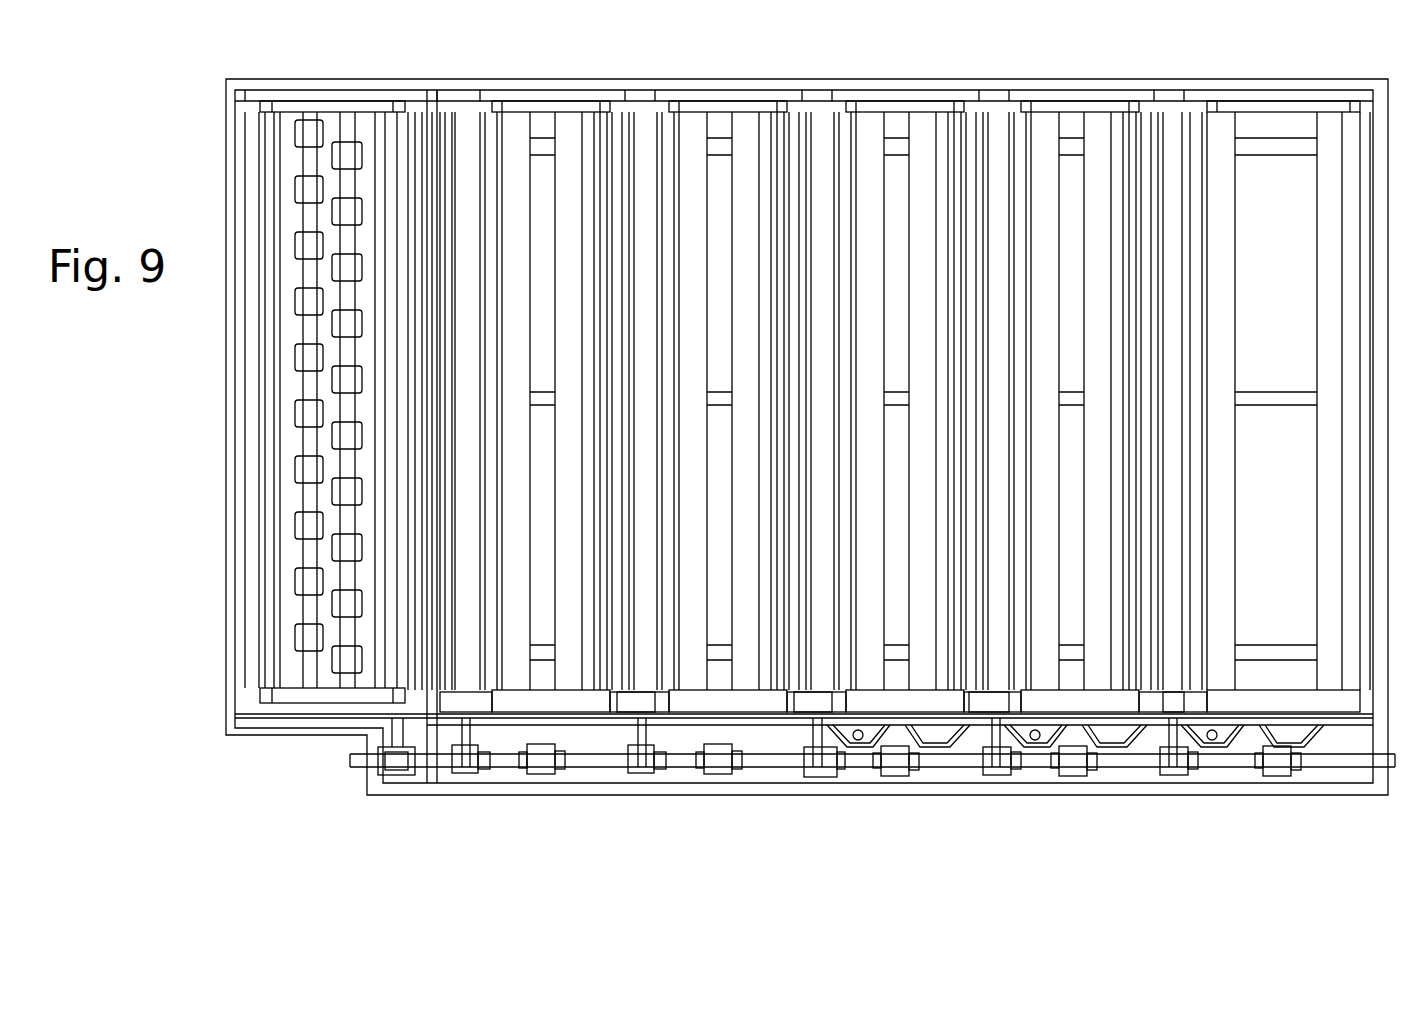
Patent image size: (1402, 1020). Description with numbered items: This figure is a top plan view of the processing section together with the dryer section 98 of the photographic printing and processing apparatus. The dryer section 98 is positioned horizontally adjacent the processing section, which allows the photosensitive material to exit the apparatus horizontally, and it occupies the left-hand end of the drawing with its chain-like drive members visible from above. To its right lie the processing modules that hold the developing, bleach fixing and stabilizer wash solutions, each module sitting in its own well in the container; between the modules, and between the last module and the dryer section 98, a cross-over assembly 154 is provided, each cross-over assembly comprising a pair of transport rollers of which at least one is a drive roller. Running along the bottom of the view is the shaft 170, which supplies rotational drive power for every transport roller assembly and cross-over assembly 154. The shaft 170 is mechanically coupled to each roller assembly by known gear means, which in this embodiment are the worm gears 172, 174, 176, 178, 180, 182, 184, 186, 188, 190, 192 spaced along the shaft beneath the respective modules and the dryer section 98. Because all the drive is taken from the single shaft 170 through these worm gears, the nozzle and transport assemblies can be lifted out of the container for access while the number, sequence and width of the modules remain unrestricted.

The dryer section 98 is at (334, 92).
The cross-over assembly 154 is at (757, 66).
The shaft 170 is at (588, 760).
The worm gear 172 is at (1277, 768).
The worm gear 174 is at (1175, 772).
The worm gear 176 is at (1072, 768).
The worm gear 178 is at (998, 772).
The worm gear 180 is at (895, 768).
The worm gear 182 is at (821, 772).
The worm gear 184 is at (718, 768).
The worm gear 186 is at (645, 772).
The worm gear 188 is at (541, 768).
The worm gear 190 is at (468, 772).
The worm gear 192 is at (397, 758).